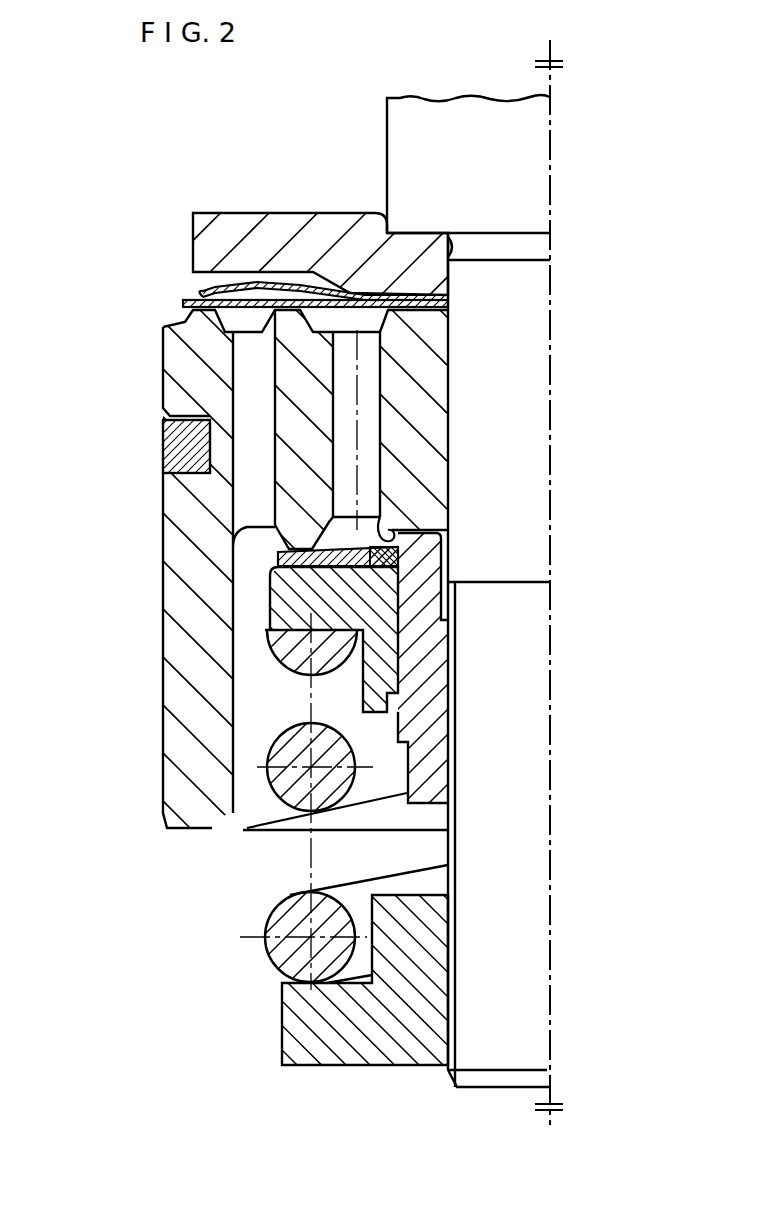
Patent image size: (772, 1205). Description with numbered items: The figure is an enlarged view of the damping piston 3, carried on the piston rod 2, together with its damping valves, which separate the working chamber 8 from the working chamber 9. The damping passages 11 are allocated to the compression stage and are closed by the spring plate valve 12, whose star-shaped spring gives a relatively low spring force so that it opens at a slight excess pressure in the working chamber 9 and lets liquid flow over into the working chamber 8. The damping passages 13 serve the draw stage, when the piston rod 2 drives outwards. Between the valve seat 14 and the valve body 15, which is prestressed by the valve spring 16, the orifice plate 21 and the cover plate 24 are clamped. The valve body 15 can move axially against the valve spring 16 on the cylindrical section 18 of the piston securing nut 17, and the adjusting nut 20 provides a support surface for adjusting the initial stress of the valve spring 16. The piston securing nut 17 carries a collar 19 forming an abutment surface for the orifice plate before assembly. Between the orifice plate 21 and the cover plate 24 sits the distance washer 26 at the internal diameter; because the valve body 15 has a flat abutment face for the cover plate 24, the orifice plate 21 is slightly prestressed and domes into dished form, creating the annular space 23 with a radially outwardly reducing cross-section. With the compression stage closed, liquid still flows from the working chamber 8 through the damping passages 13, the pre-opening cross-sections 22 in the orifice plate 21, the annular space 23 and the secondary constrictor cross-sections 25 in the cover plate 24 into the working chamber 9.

The piston rod 2 is at (407, 130).
The working chamber 8 is at (257, 162).
The spring plate valve 12 is at (193, 297).
The damping passages 11 is at (247, 363).
The damping passages 13 is at (342, 398).
The damping piston 3 is at (185, 697).
The valve seat 14 is at (265, 537).
The collar 19 is at (386, 516).
The orifice plate 21 is at (290, 547).
The distance washer 26 is at (400, 556).
The pre-opening cross-sections 22 is at (300, 524).
The secondary constrictor cross-sections 25 is at (280, 563).
The cover plate 24 is at (400, 563).
The valve body 15 is at (302, 607).
The annular space 23 is at (378, 558).
The cylindrical section 18 is at (363, 710).
The piston securing nut 17 is at (435, 730).
The valve spring 16 is at (250, 826).
The working chamber 9 is at (243, 955).
The adjusting nut 20 is at (397, 1020).